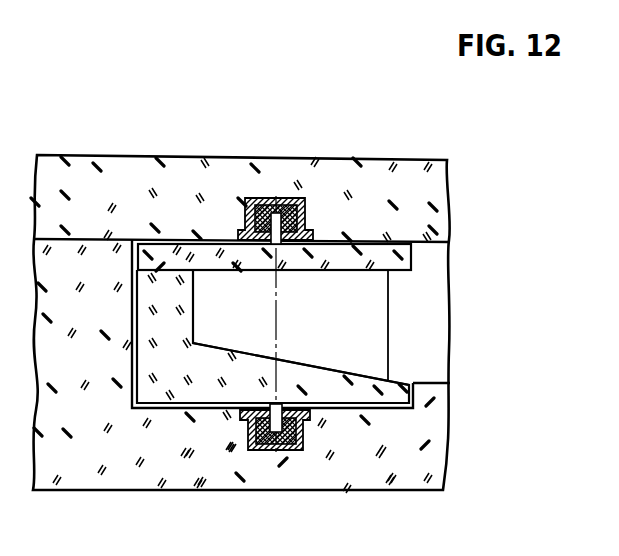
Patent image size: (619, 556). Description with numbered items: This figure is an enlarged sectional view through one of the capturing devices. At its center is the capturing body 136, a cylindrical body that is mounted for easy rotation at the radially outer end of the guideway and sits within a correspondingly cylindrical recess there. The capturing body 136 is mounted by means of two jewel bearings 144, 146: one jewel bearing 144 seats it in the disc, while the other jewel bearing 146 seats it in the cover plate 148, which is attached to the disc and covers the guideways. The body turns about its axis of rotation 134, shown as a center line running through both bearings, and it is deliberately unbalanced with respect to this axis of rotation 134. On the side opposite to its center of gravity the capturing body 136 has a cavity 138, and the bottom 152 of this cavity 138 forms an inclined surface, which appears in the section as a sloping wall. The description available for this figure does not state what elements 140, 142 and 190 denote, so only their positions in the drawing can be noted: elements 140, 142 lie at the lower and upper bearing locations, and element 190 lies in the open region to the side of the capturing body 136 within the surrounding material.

The axis of rotation 134 is at (278, 327).
The capturing body 136 is at (167, 395).
The cavity 138 is at (373, 335).
The lower bearing 140 is at (306, 432).
The upper bearing 142 is at (307, 221).
The jewel bearing 144 is at (254, 450).
The jewel bearing 146 is at (308, 221).
The cover plate 148 is at (443, 202).
The bottom of the cavity 152 is at (332, 351).
The opening 190 is at (441, 352).